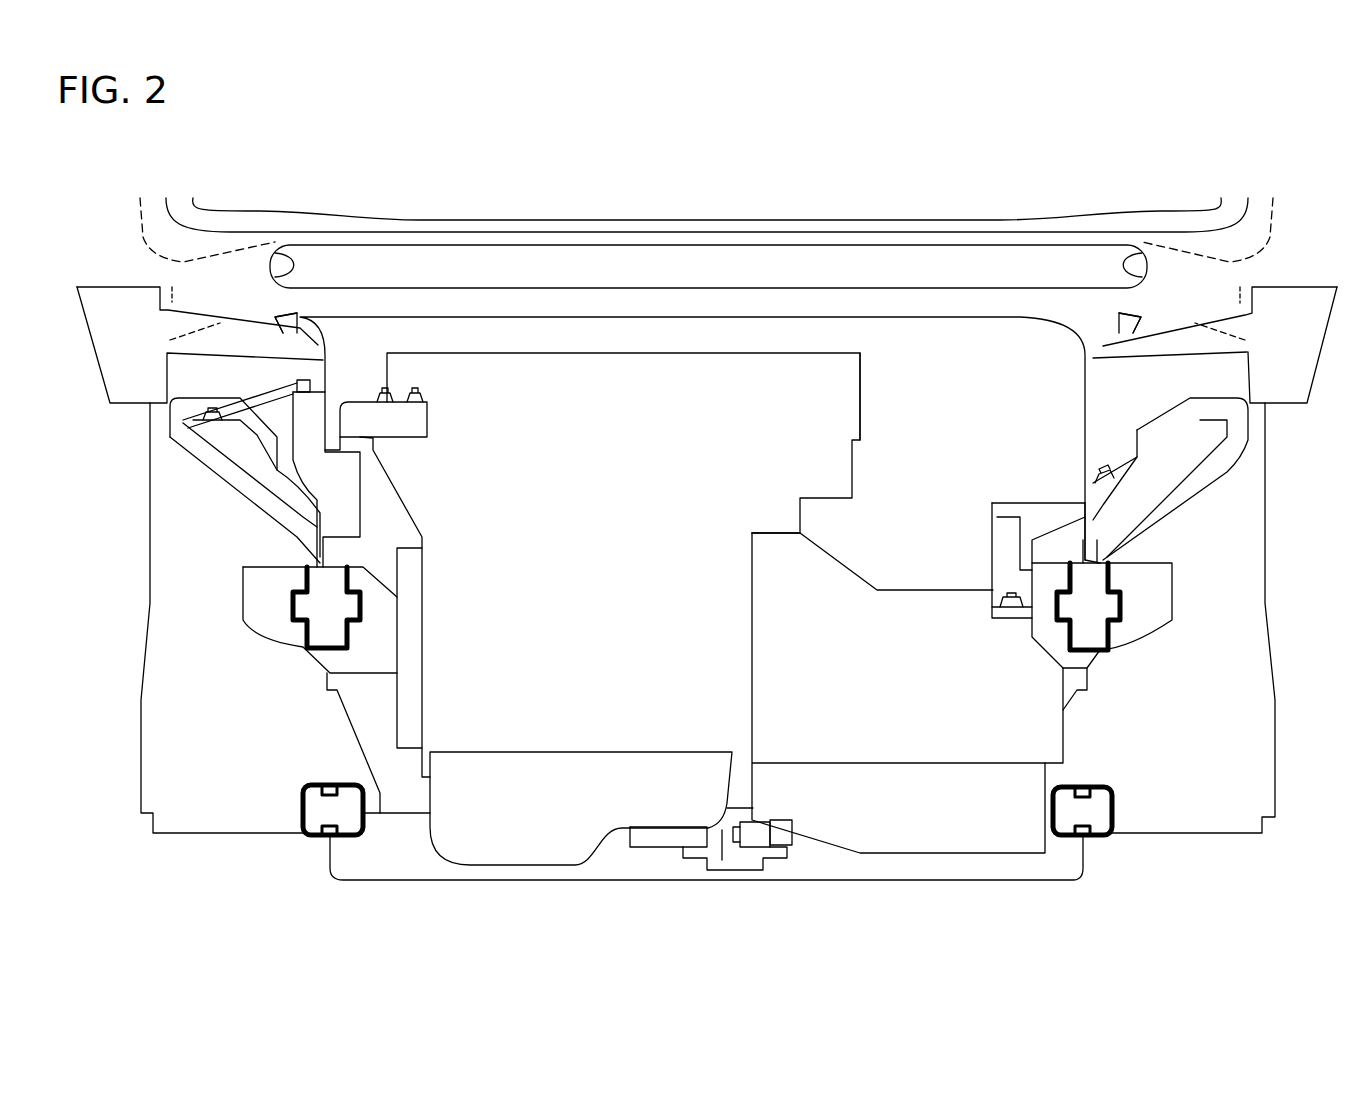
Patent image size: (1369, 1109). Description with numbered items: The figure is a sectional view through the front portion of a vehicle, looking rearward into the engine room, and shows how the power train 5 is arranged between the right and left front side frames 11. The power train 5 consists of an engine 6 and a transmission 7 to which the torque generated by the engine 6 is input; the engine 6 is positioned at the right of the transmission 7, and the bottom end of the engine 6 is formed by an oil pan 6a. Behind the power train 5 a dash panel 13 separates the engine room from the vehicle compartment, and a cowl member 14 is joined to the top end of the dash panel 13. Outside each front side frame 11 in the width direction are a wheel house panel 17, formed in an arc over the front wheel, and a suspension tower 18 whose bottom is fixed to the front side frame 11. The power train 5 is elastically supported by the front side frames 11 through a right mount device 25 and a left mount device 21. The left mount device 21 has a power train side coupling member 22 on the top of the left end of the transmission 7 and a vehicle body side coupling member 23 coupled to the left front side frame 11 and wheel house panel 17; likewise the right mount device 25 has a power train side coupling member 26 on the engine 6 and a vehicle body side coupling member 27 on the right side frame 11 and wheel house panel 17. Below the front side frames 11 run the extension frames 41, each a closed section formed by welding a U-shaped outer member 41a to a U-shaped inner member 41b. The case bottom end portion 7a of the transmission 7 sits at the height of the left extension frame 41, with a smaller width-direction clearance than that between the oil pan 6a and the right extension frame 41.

The power train 5 is at (940, 380).
The engine 6 is at (836, 410).
The oil pan 6a is at (507, 837).
The transmission 7 is at (833, 590).
The case bottom end portion 7a is at (935, 815).
The front side frame 11 is at (243, 576).
The dash panel 13 is at (972, 338).
The cowl member 14 is at (716, 265).
The wheel house panel 17 is at (237, 440).
The suspension tower 18 is at (268, 340).
The left mount device 21 is at (1012, 488).
The power train side coupling member 22 is at (993, 543).
The vehicle body side coupling member 23 is at (1053, 530).
The right mount device 25 is at (367, 378).
The power train side coupling member 26 is at (427, 420).
The vehicle body side coupling member 27 is at (340, 487).
The extension frame 41 is at (717, 885).
The outer member 41a is at (320, 837).
The inner member 41b is at (708, 886).